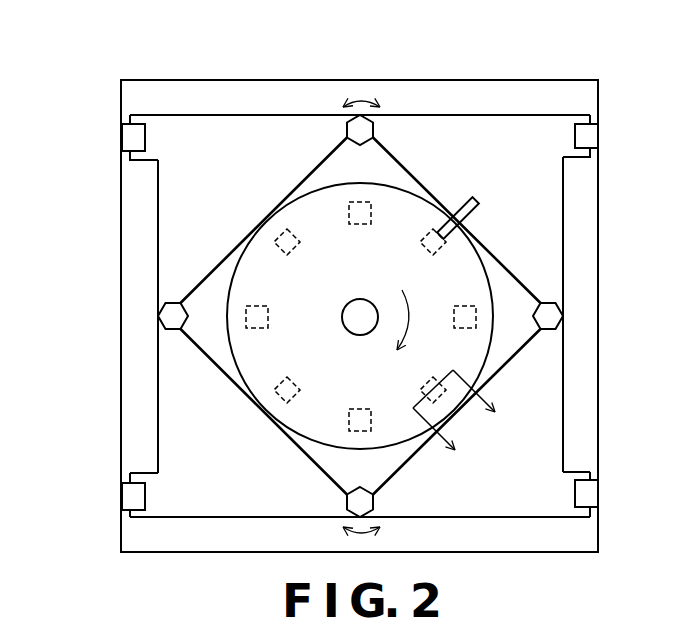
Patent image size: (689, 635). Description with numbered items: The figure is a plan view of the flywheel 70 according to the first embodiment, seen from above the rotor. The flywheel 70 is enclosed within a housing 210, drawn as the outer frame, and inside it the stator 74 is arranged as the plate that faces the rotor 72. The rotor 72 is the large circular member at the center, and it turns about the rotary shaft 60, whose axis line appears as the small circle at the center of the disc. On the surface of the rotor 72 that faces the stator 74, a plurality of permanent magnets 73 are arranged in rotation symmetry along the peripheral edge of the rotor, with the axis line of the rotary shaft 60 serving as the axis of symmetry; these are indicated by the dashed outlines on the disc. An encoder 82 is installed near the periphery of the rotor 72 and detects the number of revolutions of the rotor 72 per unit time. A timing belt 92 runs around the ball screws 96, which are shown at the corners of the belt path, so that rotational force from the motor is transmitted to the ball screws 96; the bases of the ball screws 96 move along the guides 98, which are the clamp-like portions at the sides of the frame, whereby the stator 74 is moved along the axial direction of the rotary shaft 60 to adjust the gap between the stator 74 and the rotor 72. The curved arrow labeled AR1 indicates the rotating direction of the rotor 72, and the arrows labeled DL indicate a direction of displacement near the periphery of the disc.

The flywheel 70 is at (428, 98).
The housing 210 is at (121, 234).
The stator 74 is at (533, 217).
The guide 98 is at (580, 475).
The timing belt 92 is at (412, 163).
The ball screw 96 is at (548, 315).
The rotor 72 is at (315, 215).
The rotary shaft 60 is at (360, 315).
The permanent magnet 73 is at (277, 393).
The encoder 82 is at (472, 202).
The reference sign AR1 is at (410, 303).
The displacement direction DL is at (482, 398).